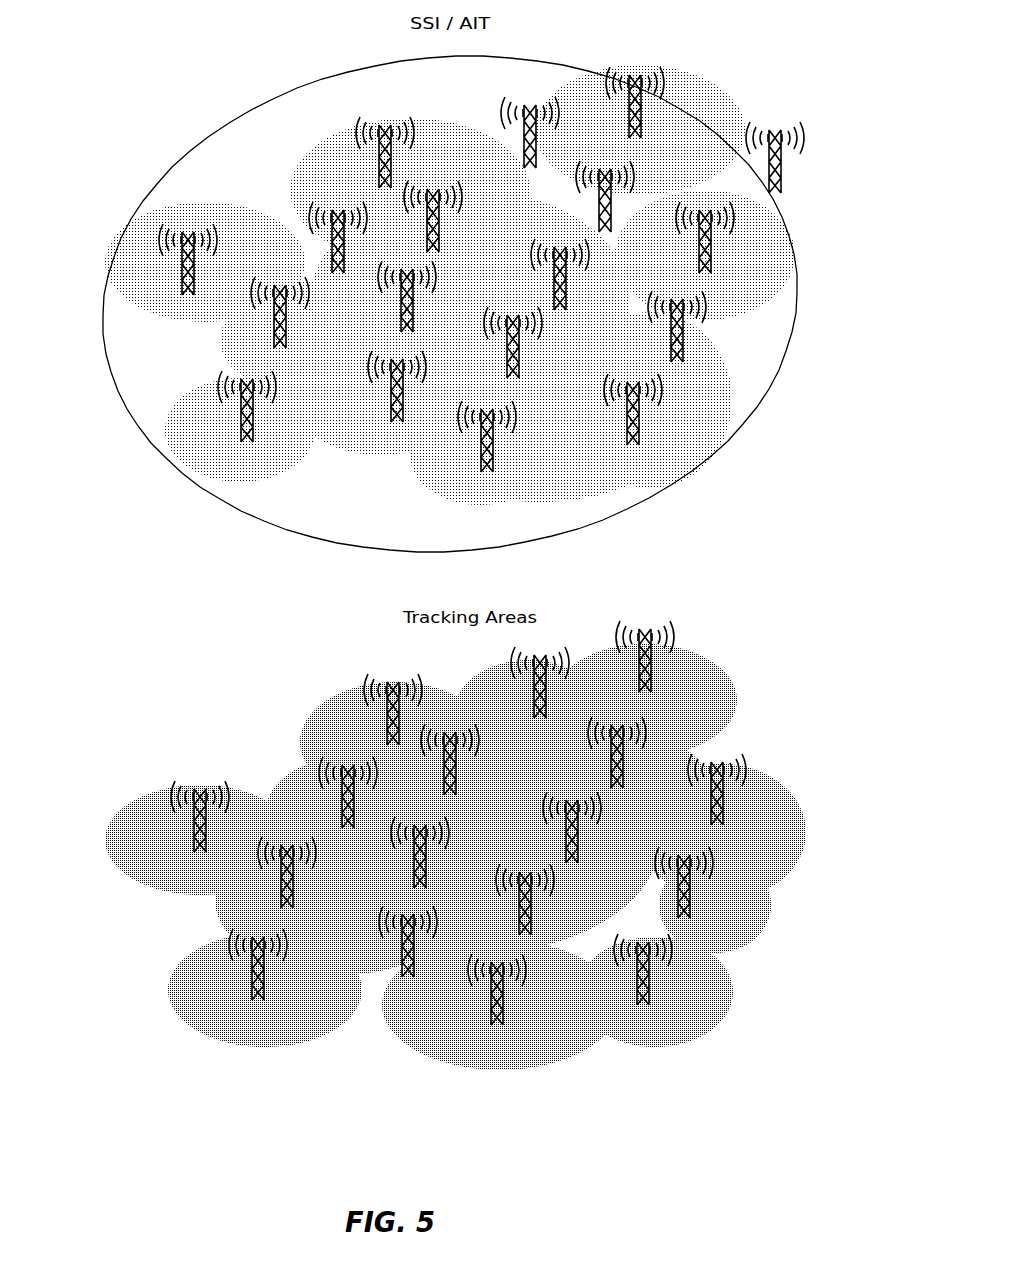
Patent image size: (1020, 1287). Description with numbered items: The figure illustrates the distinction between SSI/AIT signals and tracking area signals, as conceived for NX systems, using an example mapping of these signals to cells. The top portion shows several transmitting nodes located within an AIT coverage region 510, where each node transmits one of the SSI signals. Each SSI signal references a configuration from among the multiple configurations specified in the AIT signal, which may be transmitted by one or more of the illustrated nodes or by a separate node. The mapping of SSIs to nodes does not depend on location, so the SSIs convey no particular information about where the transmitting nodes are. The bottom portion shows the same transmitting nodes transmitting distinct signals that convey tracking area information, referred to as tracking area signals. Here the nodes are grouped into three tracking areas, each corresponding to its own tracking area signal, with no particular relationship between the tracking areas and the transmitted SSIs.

The AIT coverage region 510 is at (476, 304).